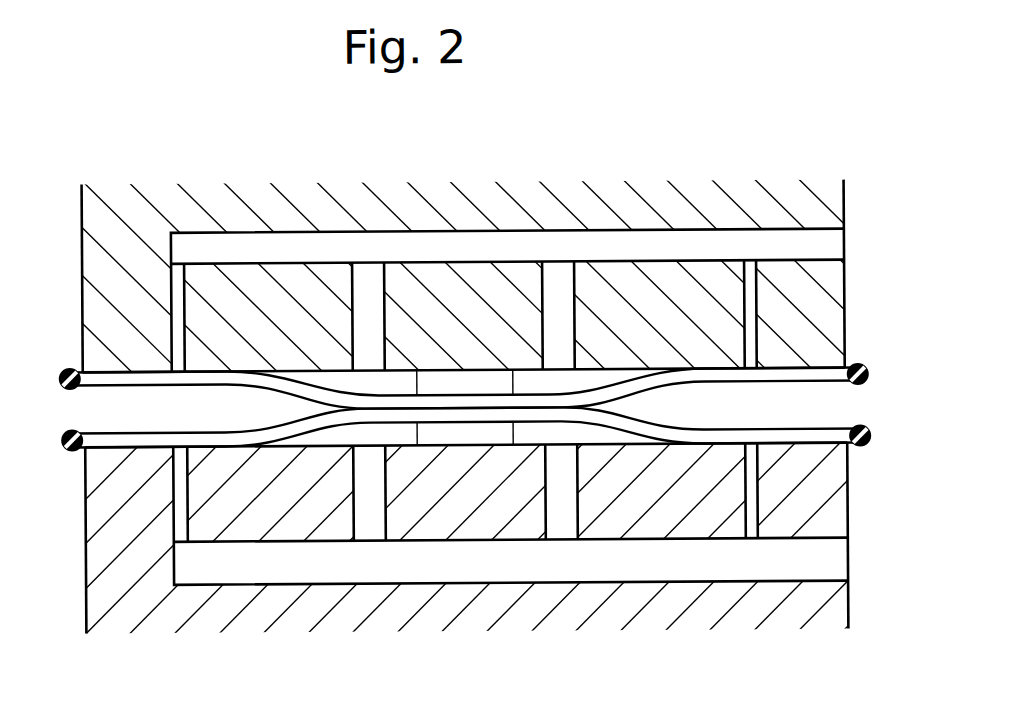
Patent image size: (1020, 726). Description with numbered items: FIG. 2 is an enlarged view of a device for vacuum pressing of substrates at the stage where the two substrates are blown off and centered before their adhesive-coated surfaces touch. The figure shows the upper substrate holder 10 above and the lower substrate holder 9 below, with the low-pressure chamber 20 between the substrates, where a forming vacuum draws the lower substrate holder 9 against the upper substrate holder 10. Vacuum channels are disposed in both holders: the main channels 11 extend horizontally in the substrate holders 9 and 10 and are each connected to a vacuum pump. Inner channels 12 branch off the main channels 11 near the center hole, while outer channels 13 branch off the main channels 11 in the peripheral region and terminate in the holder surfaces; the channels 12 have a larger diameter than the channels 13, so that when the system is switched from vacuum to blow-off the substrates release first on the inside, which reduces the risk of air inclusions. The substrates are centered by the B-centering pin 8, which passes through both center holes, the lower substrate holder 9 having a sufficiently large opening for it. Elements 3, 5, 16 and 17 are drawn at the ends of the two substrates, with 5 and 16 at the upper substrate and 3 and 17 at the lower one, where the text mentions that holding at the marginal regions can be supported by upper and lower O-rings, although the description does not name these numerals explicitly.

The lower membrane 3 is at (112, 441).
The upper membrane 5 is at (100, 366).
The B-centering pin 8 is at (472, 380).
The lower substrate holder 9 is at (110, 572).
The upper substrate holder 10 is at (103, 222).
The main channels 11 is at (637, 246).
The inner channels 12 is at (373, 525).
The outer channels 13 is at (180, 518).
The upper sealing bead 16 is at (868, 370).
The lower sealing bead 17 is at (872, 442).
The low-pressure chamber 20 is at (791, 421).